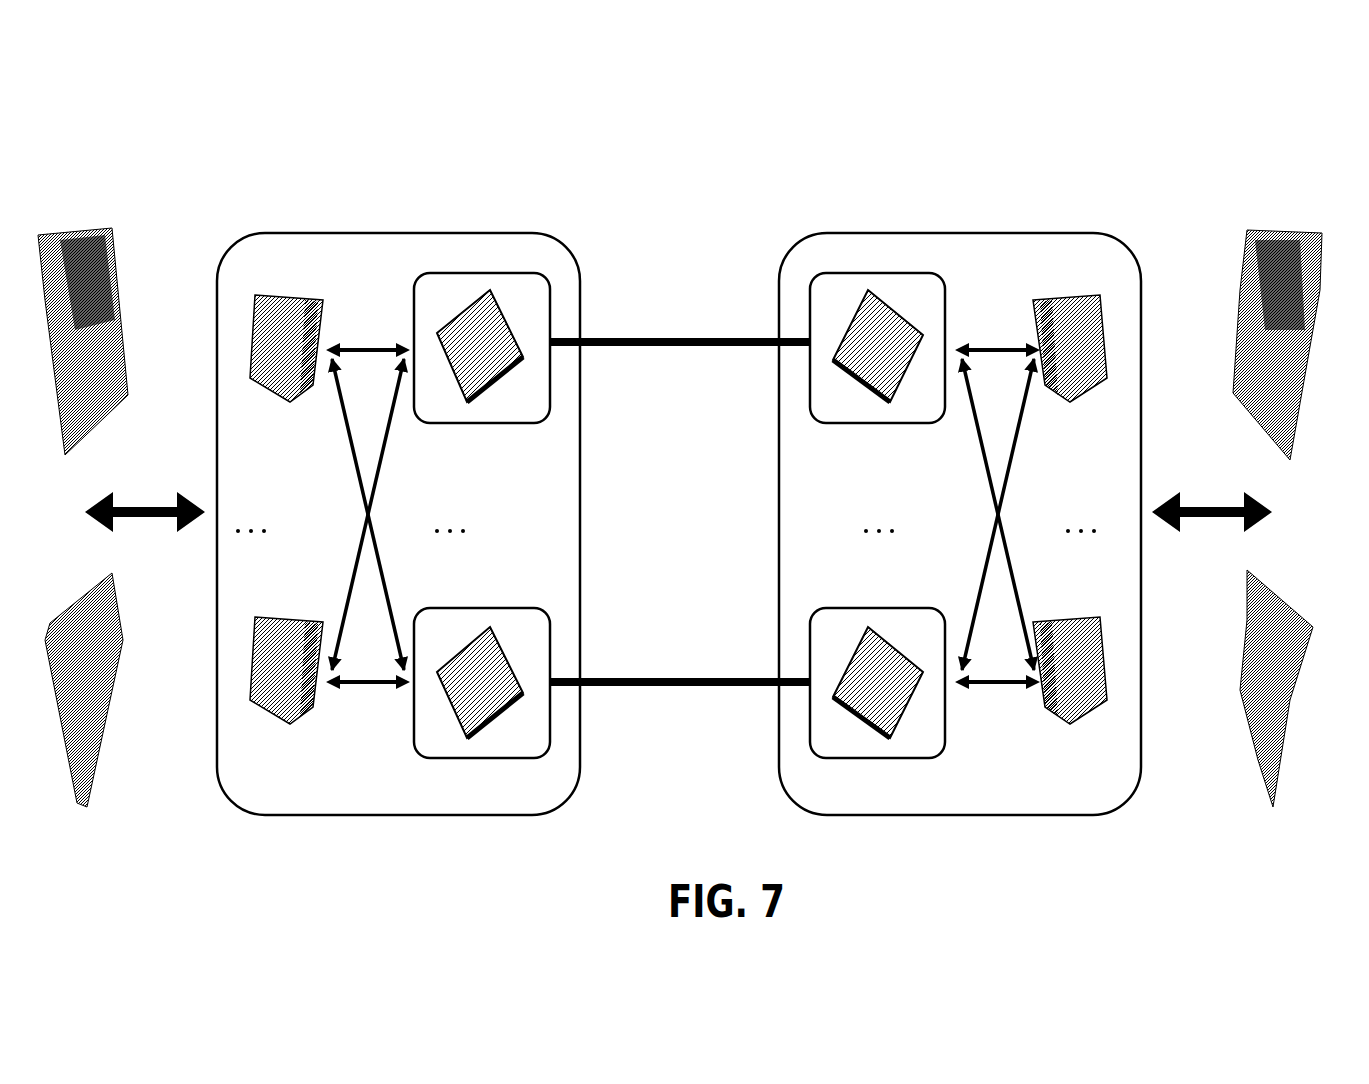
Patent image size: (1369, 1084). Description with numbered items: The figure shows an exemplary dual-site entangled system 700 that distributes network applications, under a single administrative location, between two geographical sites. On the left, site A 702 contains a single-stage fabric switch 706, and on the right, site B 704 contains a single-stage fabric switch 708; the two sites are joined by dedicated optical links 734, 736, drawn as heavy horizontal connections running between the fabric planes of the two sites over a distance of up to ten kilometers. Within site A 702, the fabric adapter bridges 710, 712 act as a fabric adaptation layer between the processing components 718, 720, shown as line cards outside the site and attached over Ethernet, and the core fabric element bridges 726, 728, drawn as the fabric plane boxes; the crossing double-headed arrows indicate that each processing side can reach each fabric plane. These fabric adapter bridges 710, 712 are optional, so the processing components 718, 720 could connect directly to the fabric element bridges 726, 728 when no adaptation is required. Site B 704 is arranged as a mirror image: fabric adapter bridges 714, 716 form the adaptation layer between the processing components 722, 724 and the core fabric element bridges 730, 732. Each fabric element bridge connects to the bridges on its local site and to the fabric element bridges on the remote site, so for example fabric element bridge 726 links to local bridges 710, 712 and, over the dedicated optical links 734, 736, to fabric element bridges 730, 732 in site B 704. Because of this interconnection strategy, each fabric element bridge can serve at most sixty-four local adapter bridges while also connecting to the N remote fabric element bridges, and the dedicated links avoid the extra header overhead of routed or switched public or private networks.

The dual-site entangled system 700 is at (1282, 116).
The site A 702 is at (455, 143).
The site B 704 is at (1005, 143).
The single-stage fabric switch 706 is at (508, 200).
The single-stage fabric switch 708 is at (1067, 200).
The fabric adapter bridge 710 is at (323, 268).
The fabric adapter bridge 712 is at (298, 578).
The fabric adapter bridge 714 is at (1030, 270).
The fabric adapter bridge 716 is at (1047, 572).
The processing component 718 is at (125, 232).
The processing component 720 is at (108, 775).
The processing component 722 is at (1240, 232).
The processing component 724 is at (1250, 770).
The fabric element bridge 726 is at (560, 292).
The fabric element bridge 728 is at (563, 630).
The fabric element bridge 730 is at (812, 303).
The fabric element bridge 732 is at (812, 638).
The dedicated optical link 734 is at (645, 346).
The dedicated optical link 736 is at (645, 686).